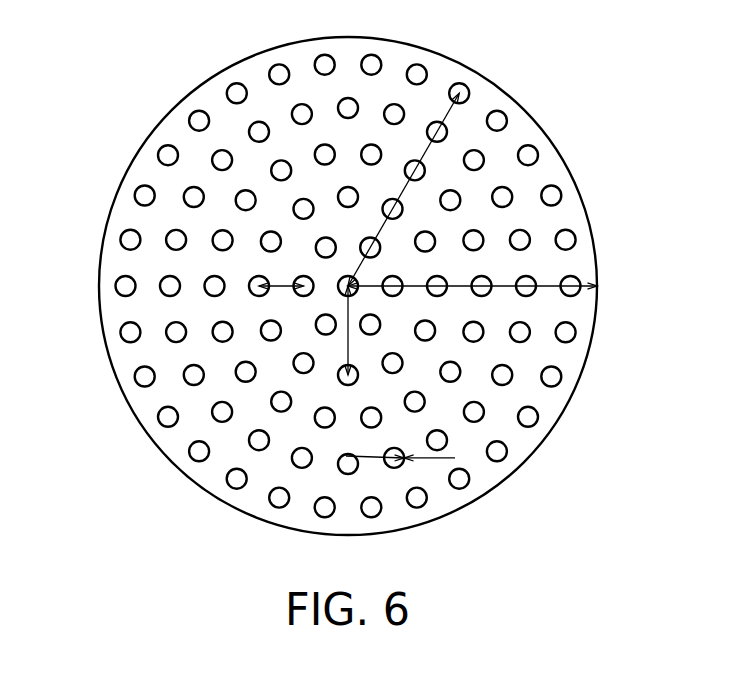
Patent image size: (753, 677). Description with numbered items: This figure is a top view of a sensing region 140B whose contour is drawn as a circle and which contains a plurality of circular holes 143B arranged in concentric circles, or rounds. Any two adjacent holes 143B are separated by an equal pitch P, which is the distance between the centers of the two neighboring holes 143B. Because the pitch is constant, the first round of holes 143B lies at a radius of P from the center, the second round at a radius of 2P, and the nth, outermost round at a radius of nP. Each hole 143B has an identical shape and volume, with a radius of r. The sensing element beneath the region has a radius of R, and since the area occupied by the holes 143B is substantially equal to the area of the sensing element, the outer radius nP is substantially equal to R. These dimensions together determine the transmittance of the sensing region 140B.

The sensing region 140B is at (127, 50).
The holes 143B is at (535, 151).
The pitch P is at (281, 272).
The radius of the sensing element R is at (472, 271).
The radius of the nth round nP is at (403, 189).
The radius of the second round 2P is at (364, 330).
The radius of each hole r is at (400, 442).